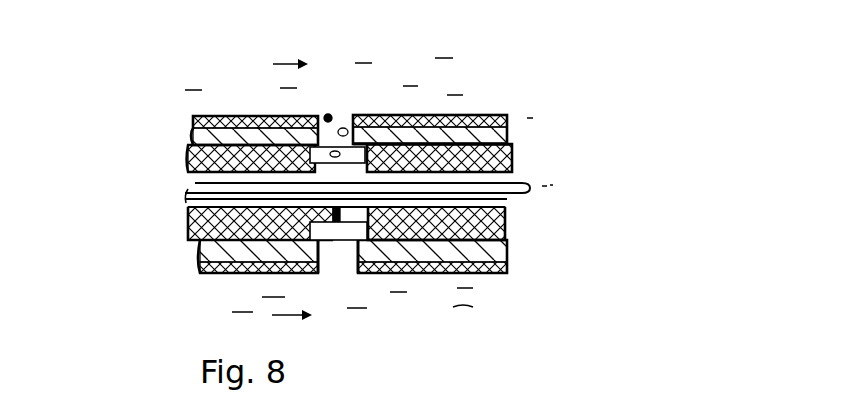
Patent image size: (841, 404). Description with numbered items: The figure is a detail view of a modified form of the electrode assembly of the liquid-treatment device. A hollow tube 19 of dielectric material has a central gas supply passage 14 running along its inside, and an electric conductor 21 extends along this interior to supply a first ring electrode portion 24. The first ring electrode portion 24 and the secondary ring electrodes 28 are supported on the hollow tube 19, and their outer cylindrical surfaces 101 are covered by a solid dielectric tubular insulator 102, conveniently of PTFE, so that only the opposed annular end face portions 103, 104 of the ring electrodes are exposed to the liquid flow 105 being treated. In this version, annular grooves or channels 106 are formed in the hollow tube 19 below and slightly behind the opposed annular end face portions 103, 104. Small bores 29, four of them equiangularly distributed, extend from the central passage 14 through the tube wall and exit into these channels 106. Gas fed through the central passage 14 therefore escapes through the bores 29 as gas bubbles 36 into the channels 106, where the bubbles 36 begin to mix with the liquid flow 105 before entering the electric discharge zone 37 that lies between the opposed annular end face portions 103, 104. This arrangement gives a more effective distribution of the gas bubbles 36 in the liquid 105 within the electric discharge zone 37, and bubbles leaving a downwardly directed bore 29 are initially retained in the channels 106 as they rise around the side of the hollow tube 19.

The central passage 14 is at (186, 203).
The hollow tube 19 is at (512, 150).
The electric conductor 21 is at (507, 202).
The first ring electrode portion 24 is at (507, 252).
The secondary ring electrodes 28 is at (197, 253).
The small bores 29 is at (334, 172).
The bubbles 36 is at (328, 112).
The electric discharge zone 37 is at (345, 125).
The outer cylindrical surfaces 101 is at (453, 113).
The solid dielectric tubular insulator 102 is at (193, 126).
The annular end face portion 103 is at (323, 258).
The annular end face portion 104 is at (352, 258).
The liquid flow 105 is at (283, 60).
The annular grooves or channels 106 is at (188, 228).